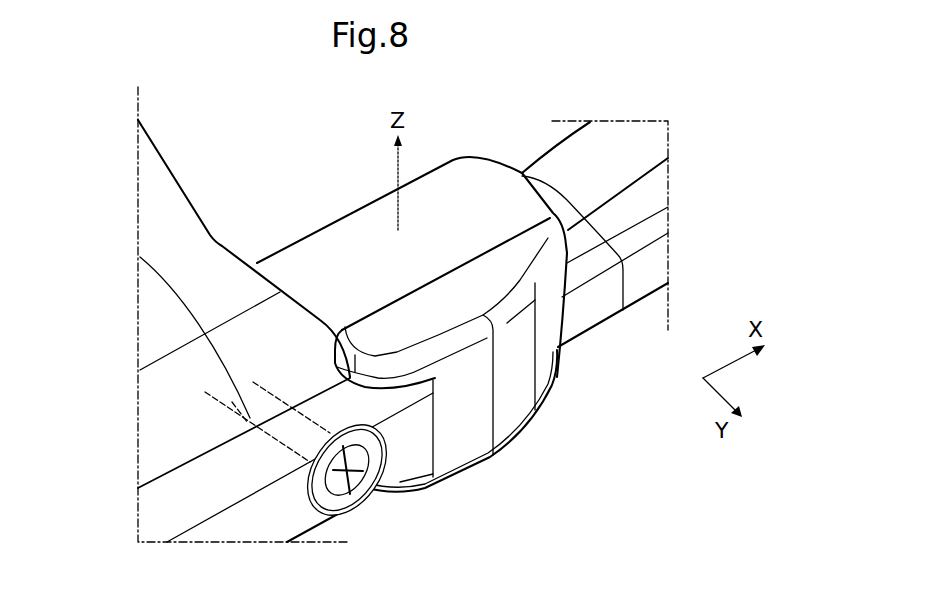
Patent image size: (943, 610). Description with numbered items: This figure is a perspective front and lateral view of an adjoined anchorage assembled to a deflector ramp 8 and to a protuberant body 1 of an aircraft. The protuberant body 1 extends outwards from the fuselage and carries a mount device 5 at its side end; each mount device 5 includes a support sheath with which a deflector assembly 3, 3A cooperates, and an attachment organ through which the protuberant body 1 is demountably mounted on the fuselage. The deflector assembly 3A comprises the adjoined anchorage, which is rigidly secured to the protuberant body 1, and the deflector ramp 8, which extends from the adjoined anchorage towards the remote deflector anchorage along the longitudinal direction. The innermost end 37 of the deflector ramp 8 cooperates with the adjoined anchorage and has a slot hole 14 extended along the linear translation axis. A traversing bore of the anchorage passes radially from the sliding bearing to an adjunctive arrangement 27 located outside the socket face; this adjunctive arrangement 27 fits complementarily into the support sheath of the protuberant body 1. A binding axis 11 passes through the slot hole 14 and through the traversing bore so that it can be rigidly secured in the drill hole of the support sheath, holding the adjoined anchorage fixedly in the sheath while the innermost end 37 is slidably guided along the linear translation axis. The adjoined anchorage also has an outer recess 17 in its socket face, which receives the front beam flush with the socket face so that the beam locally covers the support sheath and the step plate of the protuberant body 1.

The protuberant body 1 is at (165, 325).
The deflector assembly 3 is at (678, 252).
The deflector assembly 3A is at (613, 252).
The mount device 5 is at (158, 195).
The deflector ramp 8 is at (613, 142).
The binding axis 11 is at (310, 424).
The slot hole 14 is at (227, 408).
The outer recess 17 is at (557, 353).
The adjunctive arrangement 27 is at (365, 475).
The innermost end 37 is at (547, 187).